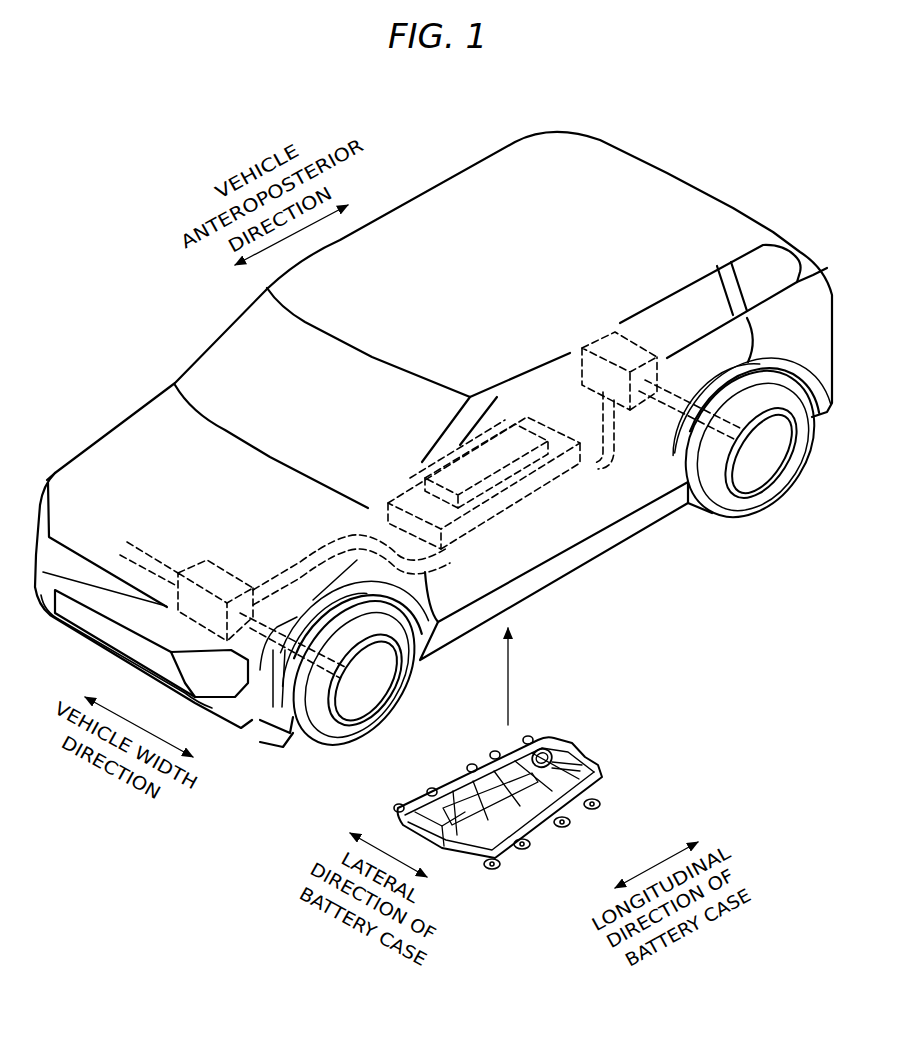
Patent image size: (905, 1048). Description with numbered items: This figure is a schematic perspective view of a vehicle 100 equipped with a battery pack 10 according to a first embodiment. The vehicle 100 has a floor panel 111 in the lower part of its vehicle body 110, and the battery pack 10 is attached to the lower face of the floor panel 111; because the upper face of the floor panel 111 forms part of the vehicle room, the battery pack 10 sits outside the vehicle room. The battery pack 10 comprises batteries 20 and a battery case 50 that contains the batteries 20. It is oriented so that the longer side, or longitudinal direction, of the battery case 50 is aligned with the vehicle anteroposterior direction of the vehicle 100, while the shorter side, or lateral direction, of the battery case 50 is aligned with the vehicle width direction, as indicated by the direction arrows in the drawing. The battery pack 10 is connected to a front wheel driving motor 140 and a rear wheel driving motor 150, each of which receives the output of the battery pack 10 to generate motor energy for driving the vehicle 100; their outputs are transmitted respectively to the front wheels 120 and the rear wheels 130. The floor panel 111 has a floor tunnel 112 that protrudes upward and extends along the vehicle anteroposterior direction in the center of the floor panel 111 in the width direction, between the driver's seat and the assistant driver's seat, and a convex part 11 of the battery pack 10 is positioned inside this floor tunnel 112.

The vehicle 100 is at (110, 250).
The vehicle body 110 is at (436, 215).
The floor panel 111 is at (495, 507).
The floor tunnel 112 is at (577, 460).
The front wheels 120 is at (304, 718).
The rear wheels 130 is at (770, 502).
The front wheel driving motor 140 is at (215, 574).
The rear wheel driving motor 150 is at (634, 345).
The battery pack 10 is at (586, 721).
The convex part 11 is at (462, 795).
The batteries 20 is at (520, 757).
The battery case 50 is at (509, 853).